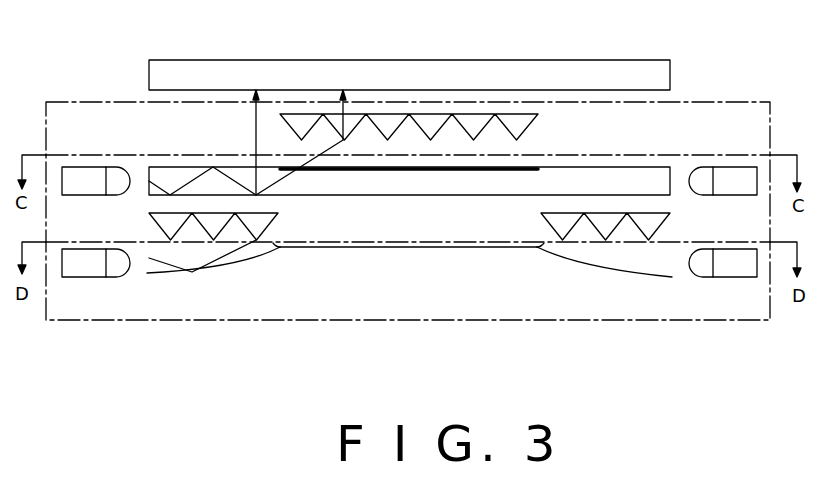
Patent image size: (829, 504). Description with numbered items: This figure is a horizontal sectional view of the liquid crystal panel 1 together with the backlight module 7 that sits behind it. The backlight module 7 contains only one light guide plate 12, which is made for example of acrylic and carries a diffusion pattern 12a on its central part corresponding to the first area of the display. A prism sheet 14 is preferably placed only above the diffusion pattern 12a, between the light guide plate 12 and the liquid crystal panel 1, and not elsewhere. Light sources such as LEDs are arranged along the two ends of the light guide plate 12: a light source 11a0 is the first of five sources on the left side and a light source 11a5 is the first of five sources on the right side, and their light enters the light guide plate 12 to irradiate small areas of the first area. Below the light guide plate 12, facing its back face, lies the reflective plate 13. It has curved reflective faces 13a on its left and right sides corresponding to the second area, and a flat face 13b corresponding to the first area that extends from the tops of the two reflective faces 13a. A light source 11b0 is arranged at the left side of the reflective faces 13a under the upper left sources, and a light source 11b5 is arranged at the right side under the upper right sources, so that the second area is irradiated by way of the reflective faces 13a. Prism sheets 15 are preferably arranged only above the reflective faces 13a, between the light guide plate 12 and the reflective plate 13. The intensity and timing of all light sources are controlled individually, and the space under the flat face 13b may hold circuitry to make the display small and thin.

The liquid crystal panel 1 is at (460, 60).
The backlight module 7 is at (705, 103).
The prism sheet 14 is at (538, 127).
The light guide plate 12 is at (621, 167).
The diffusion pattern 12a is at (492, 170).
The prism sheets 15 is at (279, 219).
The reflective plate 13 is at (409, 257).
The reflective faces 13a is at (224, 271).
The flat face 13b is at (350, 248).
The light source 11a0 is at (96, 197).
The light source 11a5 is at (725, 197).
The light source 11b0 is at (96, 279).
The light source 11b5 is at (726, 279).